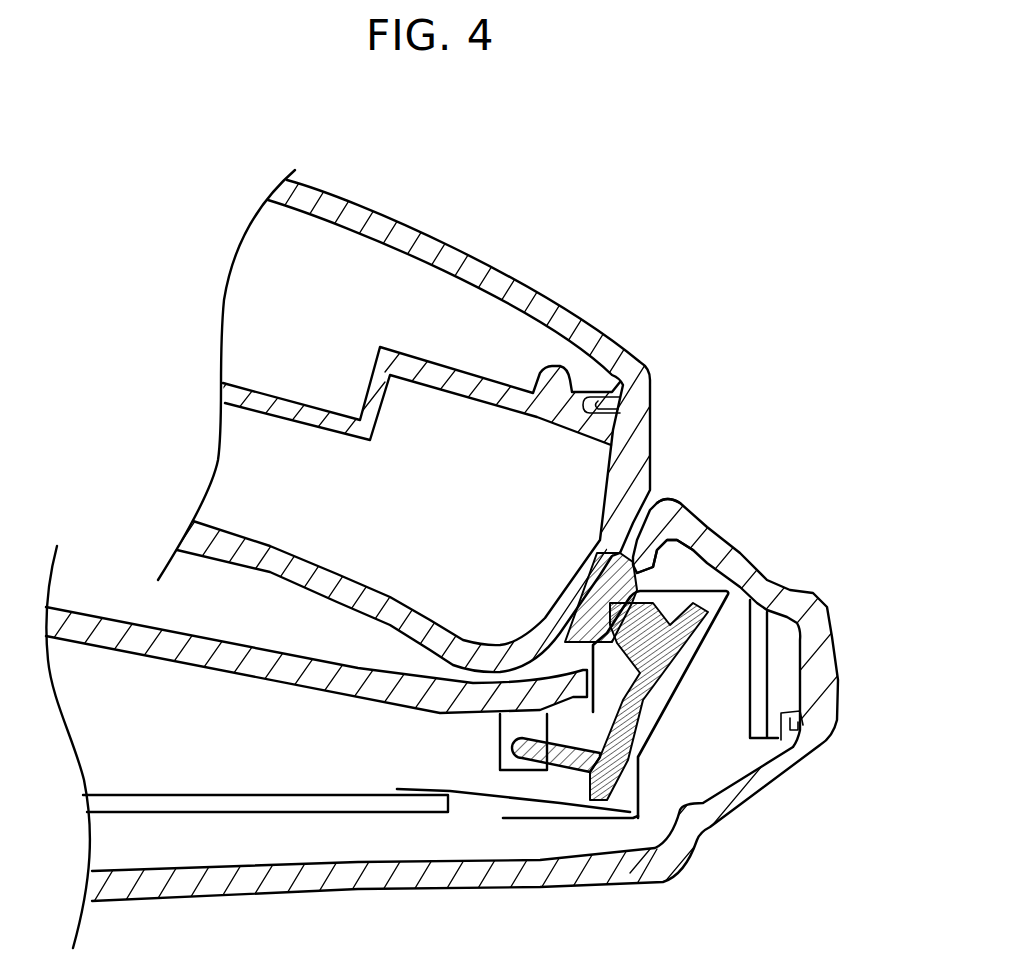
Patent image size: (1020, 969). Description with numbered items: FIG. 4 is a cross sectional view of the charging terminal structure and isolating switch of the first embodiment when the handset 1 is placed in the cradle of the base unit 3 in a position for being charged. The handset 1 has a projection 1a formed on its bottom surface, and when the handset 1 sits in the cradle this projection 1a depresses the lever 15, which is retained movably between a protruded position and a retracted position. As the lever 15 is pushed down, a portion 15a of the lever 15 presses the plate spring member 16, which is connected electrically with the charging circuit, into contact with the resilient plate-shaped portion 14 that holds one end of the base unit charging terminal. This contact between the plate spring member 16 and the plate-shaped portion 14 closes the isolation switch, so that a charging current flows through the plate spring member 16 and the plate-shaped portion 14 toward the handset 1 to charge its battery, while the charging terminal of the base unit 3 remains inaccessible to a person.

The handset 1 is at (460, 425).
The projection 1a is at (672, 502).
The base unit 3 is at (830, 610).
The plate-shaped portion 14 is at (641, 797).
The lever 15 is at (700, 680).
The clip upper portion 15a is at (668, 597).
The plate spring member 16 is at (487, 793).